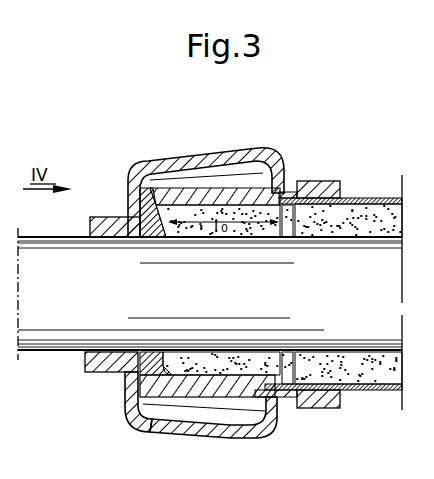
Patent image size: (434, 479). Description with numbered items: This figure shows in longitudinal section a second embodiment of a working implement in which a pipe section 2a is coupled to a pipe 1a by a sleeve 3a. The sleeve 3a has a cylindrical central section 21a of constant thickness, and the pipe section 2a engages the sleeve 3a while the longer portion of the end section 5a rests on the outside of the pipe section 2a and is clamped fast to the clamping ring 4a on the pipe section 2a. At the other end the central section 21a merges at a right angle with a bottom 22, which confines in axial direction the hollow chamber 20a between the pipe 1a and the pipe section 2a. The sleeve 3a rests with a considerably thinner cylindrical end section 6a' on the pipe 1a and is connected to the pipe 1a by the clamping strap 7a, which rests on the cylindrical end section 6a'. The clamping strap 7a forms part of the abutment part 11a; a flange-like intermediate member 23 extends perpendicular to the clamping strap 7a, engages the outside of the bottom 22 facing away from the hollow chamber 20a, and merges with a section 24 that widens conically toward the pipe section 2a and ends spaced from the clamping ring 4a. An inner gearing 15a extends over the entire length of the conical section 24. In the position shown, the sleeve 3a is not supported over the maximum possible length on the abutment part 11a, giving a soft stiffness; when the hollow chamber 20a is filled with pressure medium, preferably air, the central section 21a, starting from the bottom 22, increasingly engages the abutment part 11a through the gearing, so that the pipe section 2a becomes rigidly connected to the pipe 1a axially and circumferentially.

The pipe 1a is at (41, 352).
The pipe section 2a is at (374, 198).
The sleeve 3a is at (242, 184).
The clamping ring 4a is at (324, 181).
The end section 5a is at (289, 196).
The cylindrical end section 6a' is at (115, 201).
The clamping strap 7a is at (103, 366).
The abutment part 11a is at (171, 153).
The inner gearing 15a is at (172, 406).
The hollow chamber 20a is at (354, 370).
The central section 21a is at (193, 197).
The bottom 22 is at (157, 213).
The intermediate member 23 is at (130, 407).
The section 24 is at (201, 426).